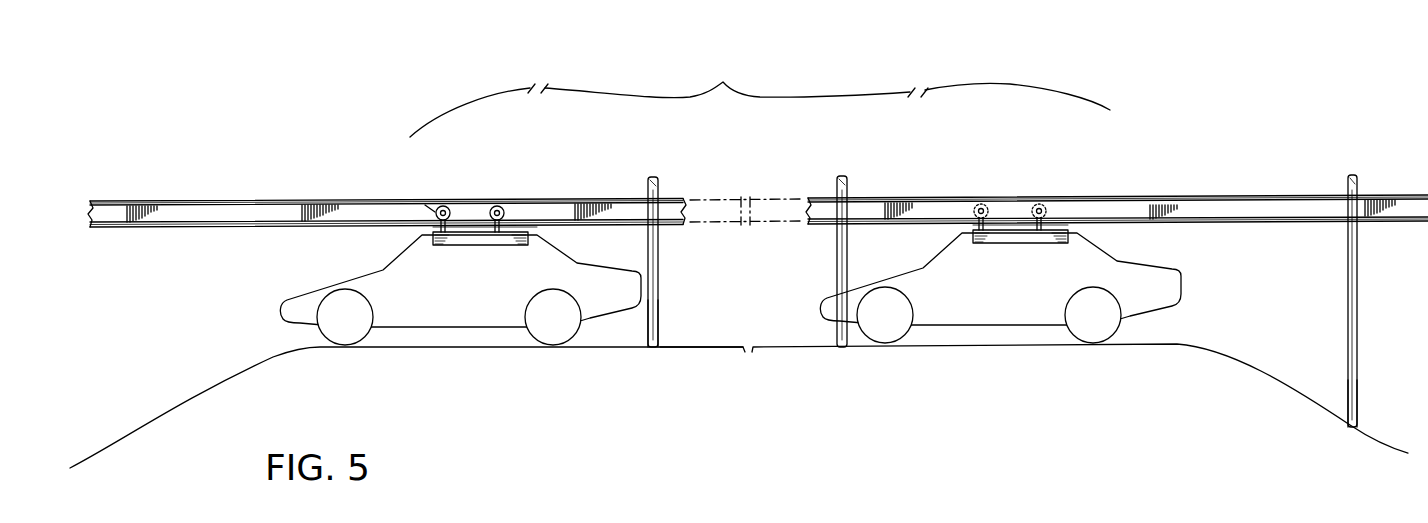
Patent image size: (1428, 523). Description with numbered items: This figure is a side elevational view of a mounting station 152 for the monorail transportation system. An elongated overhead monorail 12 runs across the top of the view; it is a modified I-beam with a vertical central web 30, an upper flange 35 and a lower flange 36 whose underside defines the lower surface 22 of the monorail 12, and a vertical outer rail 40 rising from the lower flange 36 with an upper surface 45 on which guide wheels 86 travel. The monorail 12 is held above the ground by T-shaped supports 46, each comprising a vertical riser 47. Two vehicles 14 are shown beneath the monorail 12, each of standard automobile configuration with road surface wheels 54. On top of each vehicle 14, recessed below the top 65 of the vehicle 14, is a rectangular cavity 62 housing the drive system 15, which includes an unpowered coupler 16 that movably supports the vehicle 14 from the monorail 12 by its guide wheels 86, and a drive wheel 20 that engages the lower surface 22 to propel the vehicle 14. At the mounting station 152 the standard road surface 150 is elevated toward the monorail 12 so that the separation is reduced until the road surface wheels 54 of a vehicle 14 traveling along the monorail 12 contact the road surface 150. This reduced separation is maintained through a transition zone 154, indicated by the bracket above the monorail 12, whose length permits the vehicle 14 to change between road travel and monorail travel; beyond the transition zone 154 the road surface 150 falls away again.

The monorail 12 is at (1318, 162).
The vehicle 14 is at (487, 285).
The drive system 15 is at (468, 212).
The coupler 16 is at (428, 203).
The drive wheel 20 is at (484, 209).
The lower surface 22 is at (172, 229).
The central web 30 is at (86, 212).
The upper flange 35 is at (240, 200).
The lower flange 36 is at (264, 227).
The outer rail 40 is at (212, 214).
The upper surface of outer rail 45 is at (303, 219).
The T-shaped support 46 is at (832, 262).
The vertical riser 47 is at (660, 312).
The road surface wheels 54 is at (523, 347).
The rectangular cavity 62 is at (491, 248).
The top of vehicle 65 is at (517, 208).
The guide wheels 86 is at (537, 232).
The road surface 150 is at (197, 395).
The mounting station 152 is at (691, 396).
The transition zone 154 is at (760, 89).